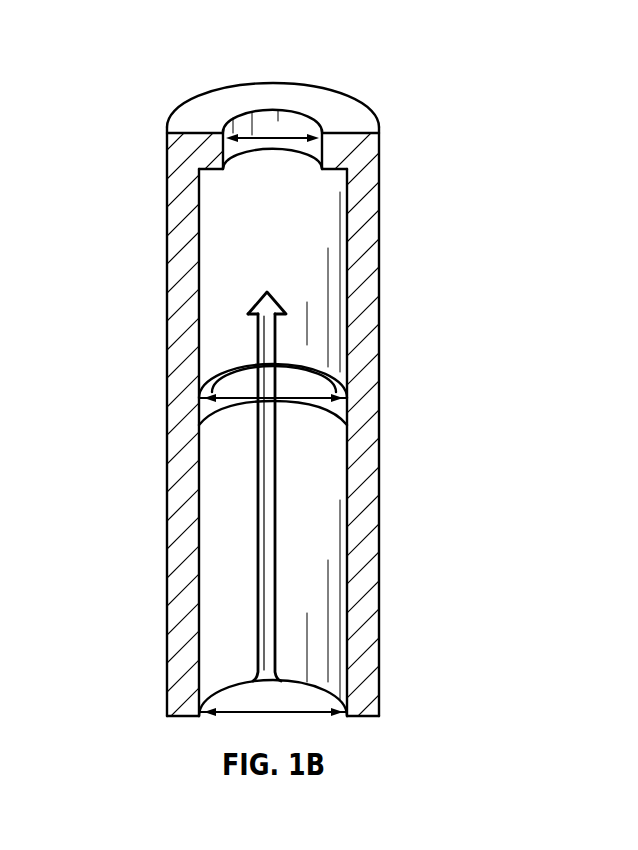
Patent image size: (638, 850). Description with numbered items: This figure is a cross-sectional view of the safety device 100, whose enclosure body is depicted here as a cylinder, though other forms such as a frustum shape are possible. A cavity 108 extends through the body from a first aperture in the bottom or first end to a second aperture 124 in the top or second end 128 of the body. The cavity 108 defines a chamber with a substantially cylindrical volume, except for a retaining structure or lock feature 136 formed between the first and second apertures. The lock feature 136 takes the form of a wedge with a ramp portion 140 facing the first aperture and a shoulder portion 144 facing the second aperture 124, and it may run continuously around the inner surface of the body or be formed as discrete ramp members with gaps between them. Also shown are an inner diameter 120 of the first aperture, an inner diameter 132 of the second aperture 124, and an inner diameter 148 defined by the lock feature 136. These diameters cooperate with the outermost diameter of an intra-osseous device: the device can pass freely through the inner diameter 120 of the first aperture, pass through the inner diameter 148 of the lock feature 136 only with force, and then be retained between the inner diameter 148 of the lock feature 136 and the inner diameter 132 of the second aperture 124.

The safety device 100 is at (121, 49).
The cavity 108 is at (320, 298).
The inner diameter of the first aperture 120 is at (306, 711).
The second aperture 124 is at (313, 117).
The second end 128 is at (282, 90).
The inner diameter of the second aperture 132 is at (253, 137).
The lock feature 136 is at (301, 403).
The ramp portion 140 is at (233, 388).
The shoulder portion 144 is at (202, 393).
The inner diameter defined by the lock feature 148 is at (230, 400).